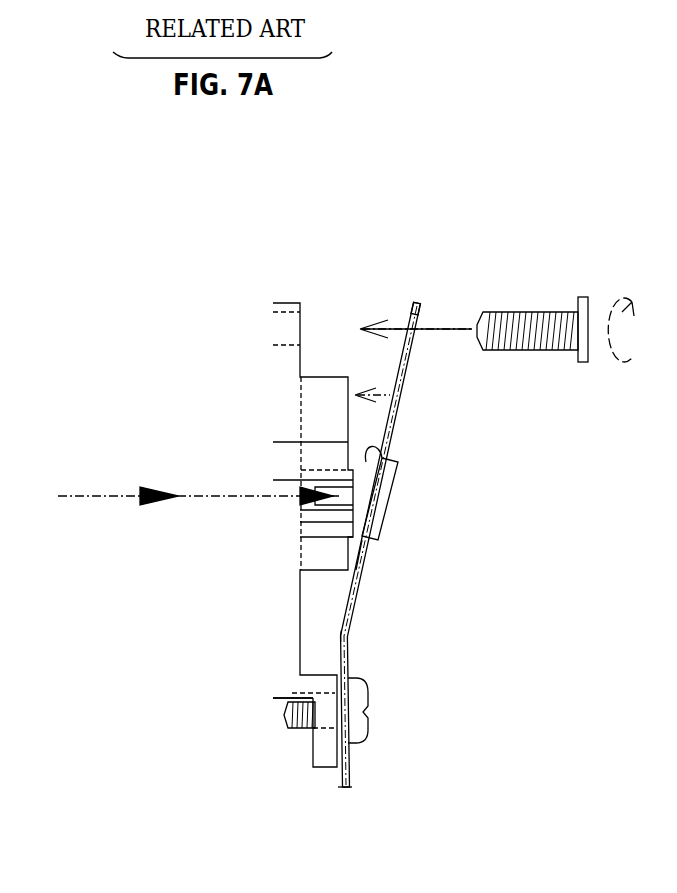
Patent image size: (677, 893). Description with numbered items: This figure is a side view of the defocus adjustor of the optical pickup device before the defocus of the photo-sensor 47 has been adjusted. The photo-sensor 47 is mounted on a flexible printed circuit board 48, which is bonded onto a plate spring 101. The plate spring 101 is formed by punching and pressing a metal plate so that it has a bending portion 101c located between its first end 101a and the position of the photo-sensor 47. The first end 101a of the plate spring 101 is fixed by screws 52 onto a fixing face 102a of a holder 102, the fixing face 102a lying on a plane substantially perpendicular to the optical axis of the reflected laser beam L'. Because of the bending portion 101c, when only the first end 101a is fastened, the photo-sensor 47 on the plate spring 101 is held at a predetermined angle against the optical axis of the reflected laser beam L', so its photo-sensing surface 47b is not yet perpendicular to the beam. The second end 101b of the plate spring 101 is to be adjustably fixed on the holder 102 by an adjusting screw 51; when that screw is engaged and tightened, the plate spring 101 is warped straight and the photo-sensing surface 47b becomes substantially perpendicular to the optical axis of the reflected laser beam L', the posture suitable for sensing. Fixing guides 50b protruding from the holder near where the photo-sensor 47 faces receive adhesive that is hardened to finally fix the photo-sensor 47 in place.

The second end of plate spring 101b is at (412, 316).
The adjusting screw 51 is at (559, 313).
The reflected laser beam L is at (163, 492).
The photo-sensing surface 47b is at (374, 457).
The photo-sensor 47 is at (386, 496).
The flexible printed circuit board 48 is at (358, 583).
The fixing guides 50b is at (325, 511).
The plate spring 101 is at (350, 596).
The holder 102 is at (283, 624).
The bending portion 101c is at (345, 637).
The fixing face 102a is at (352, 703).
The screws 52 is at (357, 731).
The first end of plate spring 101a is at (350, 787).